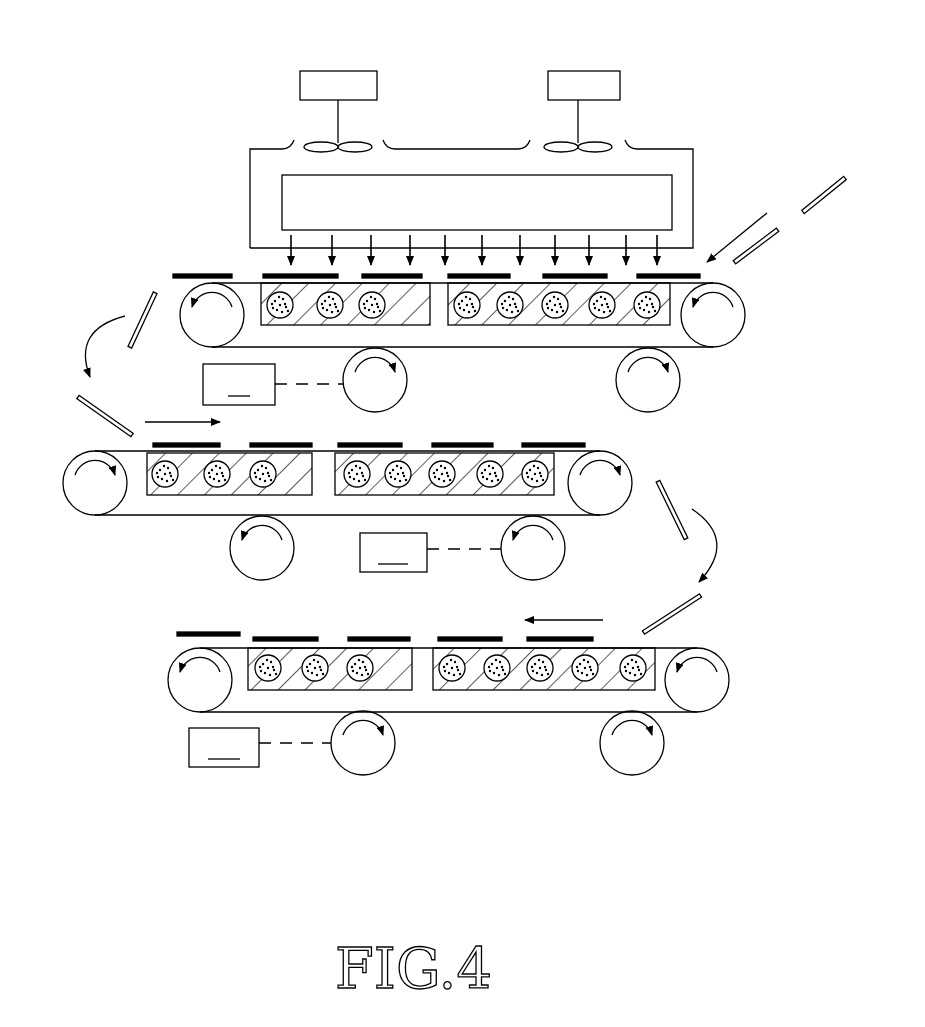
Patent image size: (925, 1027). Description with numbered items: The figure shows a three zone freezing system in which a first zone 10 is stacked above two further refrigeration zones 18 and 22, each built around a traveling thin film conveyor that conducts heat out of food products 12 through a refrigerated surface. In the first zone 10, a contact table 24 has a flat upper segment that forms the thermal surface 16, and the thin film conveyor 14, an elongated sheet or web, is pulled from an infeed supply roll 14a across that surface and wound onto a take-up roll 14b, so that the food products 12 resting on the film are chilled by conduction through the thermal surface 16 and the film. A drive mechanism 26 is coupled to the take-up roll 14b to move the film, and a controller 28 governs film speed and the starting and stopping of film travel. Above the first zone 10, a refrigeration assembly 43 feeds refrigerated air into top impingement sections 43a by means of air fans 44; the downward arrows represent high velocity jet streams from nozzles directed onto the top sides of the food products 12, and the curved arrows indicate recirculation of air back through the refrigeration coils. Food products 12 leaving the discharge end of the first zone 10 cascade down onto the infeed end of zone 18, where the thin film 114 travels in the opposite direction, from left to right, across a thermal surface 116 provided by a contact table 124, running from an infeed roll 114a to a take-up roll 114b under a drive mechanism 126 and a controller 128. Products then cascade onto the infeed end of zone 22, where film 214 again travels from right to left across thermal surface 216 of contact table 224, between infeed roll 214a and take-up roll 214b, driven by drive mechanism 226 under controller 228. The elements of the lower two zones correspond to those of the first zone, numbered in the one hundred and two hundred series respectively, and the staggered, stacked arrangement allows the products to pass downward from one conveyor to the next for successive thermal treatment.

The first zone 10 is at (804, 264).
The food products 12 is at (308, 277).
The thin film conveyor 14 is at (250, 283).
The infeed supply roll 14a is at (680, 385).
The take-up roll 14b is at (407, 375).
The thermal surface 16 is at (435, 283).
The refrigeration zone 18 is at (742, 481).
The refrigeration zone 22 is at (754, 689).
The contact table 24 is at (520, 325).
The drive mechanism 26 is at (313, 386).
The controller 28 is at (239, 384).
The refrigeration assembly 43 is at (418, 175).
The top impingement sections 43a is at (643, 230).
The air fans 44 is at (347, 71).
The subsequent conveyor 114 is at (232, 453).
The infeed supply roll 114a is at (230, 542).
The take-up roll 114b is at (563, 558).
The thermal surface 116 is at (420, 453).
The contact table 124 is at (303, 495).
The drive mechanism 126 is at (468, 545).
The controller 128 is at (393, 552).
The subsequent conveyor 214 is at (333, 648).
The infeed supply roll 214a is at (603, 762).
The take-up roll 214b is at (383, 773).
The thermal surface 216 is at (423, 648).
The contact table 224 is at (520, 690).
The drive mechanism 226 is at (297, 745).
The controller 228 is at (224, 747).